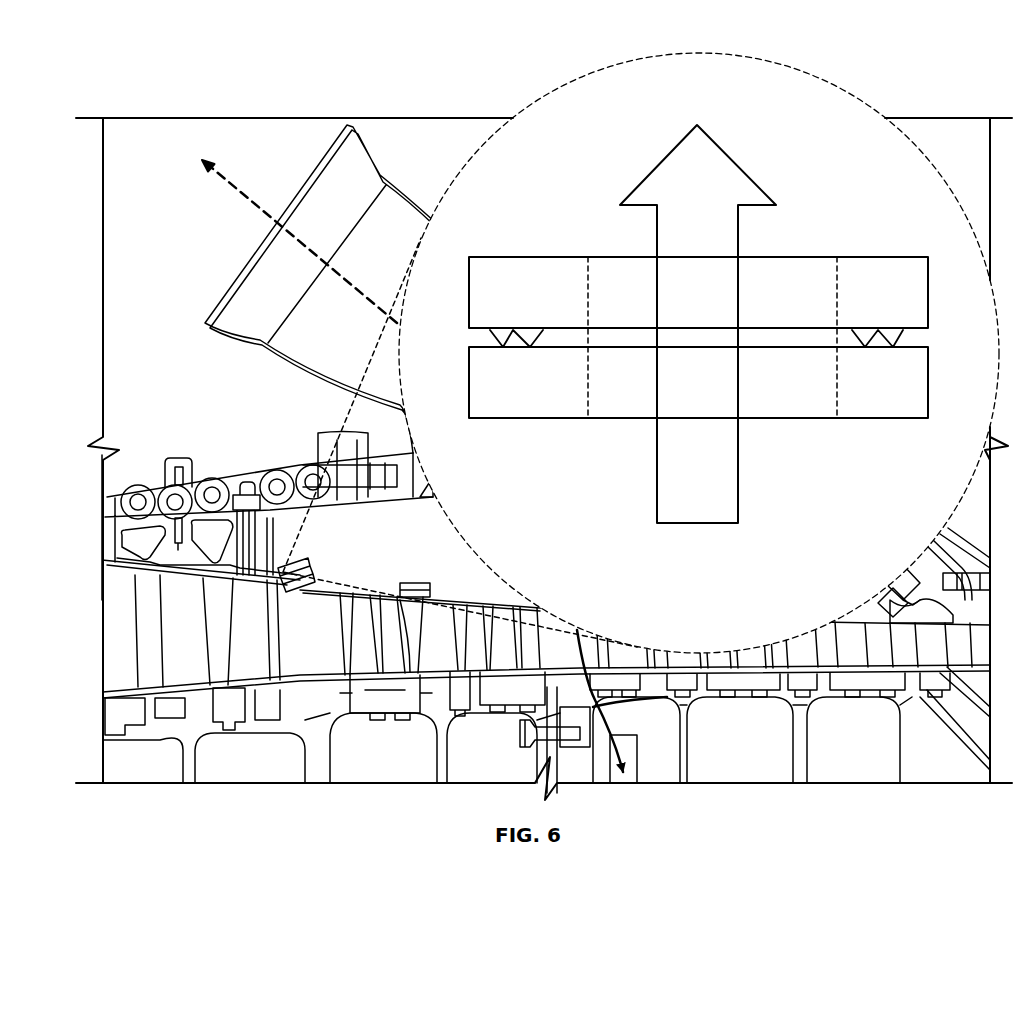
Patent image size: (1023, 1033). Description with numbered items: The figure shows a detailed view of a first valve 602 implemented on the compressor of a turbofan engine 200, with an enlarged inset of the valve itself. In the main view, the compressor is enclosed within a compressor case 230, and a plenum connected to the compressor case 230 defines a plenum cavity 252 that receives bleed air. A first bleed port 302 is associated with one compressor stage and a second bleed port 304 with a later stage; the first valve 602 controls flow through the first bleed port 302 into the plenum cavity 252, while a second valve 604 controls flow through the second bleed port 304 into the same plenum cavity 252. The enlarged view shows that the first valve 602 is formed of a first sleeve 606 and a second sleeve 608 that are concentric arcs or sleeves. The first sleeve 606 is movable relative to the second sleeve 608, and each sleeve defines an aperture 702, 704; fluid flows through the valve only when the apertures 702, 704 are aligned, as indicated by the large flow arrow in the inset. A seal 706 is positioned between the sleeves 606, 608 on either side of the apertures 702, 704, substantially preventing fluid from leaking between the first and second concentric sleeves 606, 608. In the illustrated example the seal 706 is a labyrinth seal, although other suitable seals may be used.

The turbofan engine 200 is at (108, 80).
The compressor case 230 is at (257, 747).
The plenum cavity 252 is at (300, 530).
The first bleed port 302 is at (293, 597).
The second bleed port 304 is at (413, 613).
The first valve 602 is at (802, 152).
The second valve 604 is at (413, 577).
The first sleeve 606 is at (546, 408).
The second sleeve 608 is at (514, 267).
The aperture 702 is at (615, 267).
The aperture 704 is at (612, 408).
The seal 706 is at (490, 337).